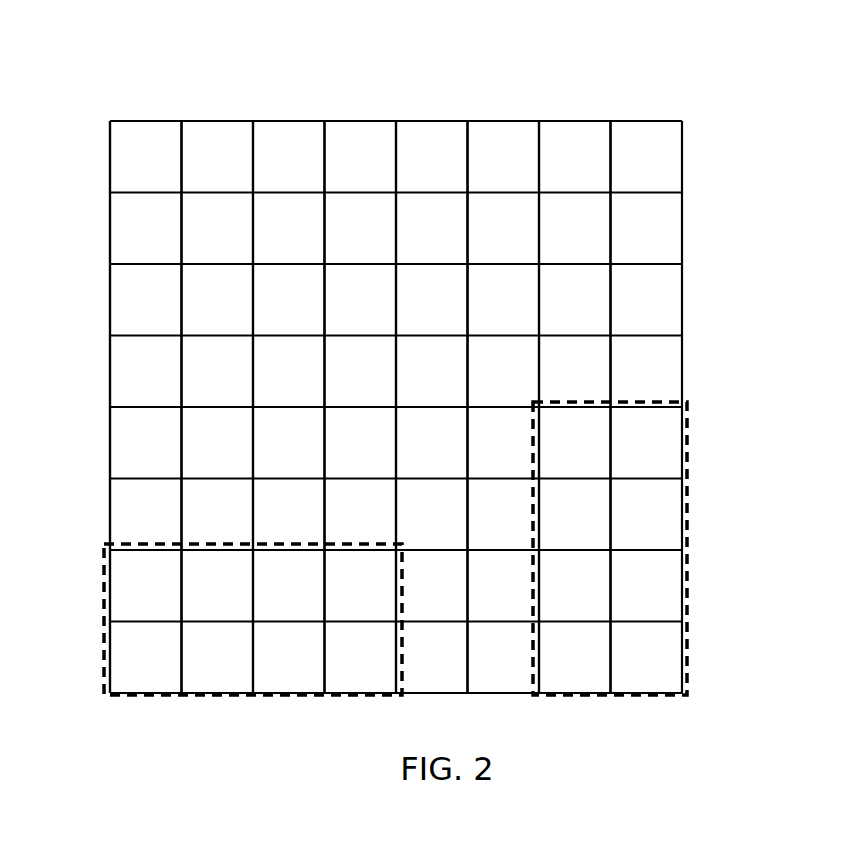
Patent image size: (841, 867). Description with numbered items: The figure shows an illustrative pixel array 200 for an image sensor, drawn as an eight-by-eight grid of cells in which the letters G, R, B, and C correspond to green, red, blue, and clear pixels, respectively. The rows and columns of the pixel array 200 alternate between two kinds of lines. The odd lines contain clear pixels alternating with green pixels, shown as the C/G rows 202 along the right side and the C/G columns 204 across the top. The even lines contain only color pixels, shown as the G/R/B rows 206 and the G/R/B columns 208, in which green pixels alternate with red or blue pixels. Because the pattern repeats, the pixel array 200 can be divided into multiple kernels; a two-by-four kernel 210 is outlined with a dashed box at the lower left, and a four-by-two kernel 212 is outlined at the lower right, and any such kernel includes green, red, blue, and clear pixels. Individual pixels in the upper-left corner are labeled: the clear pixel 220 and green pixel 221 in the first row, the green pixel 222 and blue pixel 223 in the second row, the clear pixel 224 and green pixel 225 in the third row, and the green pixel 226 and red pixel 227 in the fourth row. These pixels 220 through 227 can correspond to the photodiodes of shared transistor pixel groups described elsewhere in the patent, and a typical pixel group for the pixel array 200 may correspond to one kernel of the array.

The pixel array 200 is at (125, 39).
The C/G rows 202 is at (703, 121).
The C/G columns 204 is at (182, 99).
The G/R/B rows 206 is at (703, 192).
The G/R/B columns 208 is at (253, 99).
The 2×4 kernel 210 is at (165, 698).
The 4×2 kernel 212 is at (599, 698).
The pixel 220 is at (120, 150).
The pixel 221 is at (203, 169).
The pixel 222 is at (120, 222).
The pixel 223 is at (203, 240).
The pixel 224 is at (120, 293).
The pixel 225 is at (203, 312).
The pixel 226 is at (120, 364).
The pixel 227 is at (203, 384).